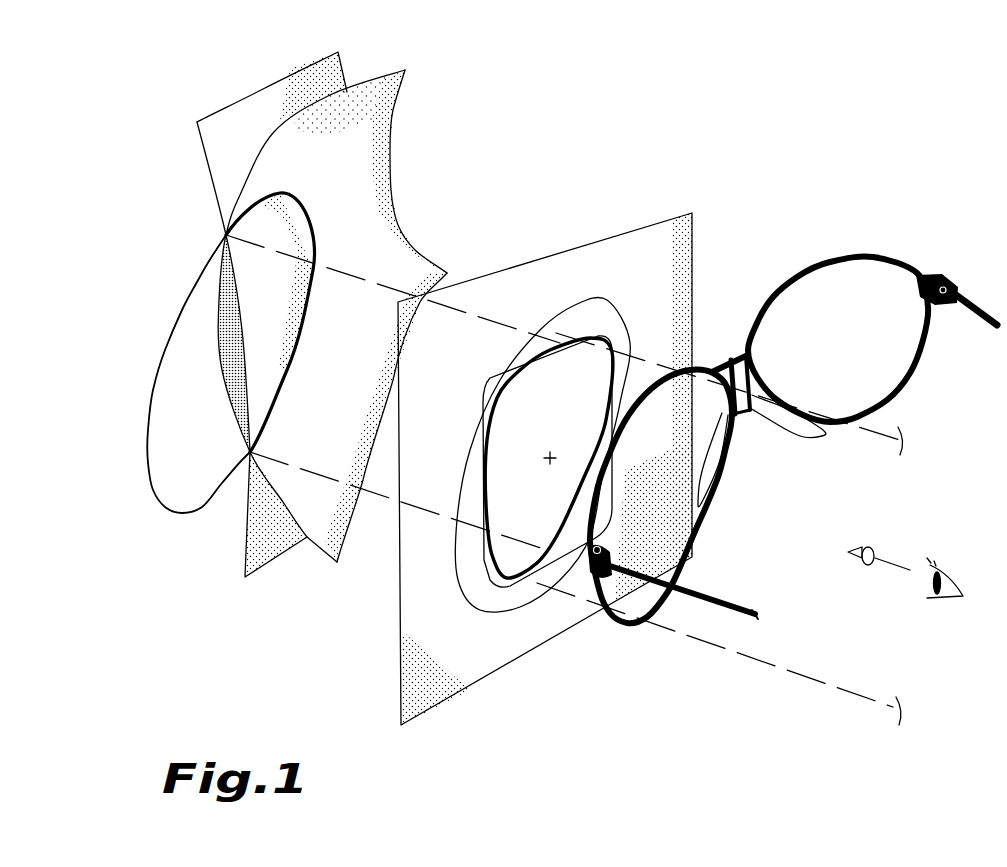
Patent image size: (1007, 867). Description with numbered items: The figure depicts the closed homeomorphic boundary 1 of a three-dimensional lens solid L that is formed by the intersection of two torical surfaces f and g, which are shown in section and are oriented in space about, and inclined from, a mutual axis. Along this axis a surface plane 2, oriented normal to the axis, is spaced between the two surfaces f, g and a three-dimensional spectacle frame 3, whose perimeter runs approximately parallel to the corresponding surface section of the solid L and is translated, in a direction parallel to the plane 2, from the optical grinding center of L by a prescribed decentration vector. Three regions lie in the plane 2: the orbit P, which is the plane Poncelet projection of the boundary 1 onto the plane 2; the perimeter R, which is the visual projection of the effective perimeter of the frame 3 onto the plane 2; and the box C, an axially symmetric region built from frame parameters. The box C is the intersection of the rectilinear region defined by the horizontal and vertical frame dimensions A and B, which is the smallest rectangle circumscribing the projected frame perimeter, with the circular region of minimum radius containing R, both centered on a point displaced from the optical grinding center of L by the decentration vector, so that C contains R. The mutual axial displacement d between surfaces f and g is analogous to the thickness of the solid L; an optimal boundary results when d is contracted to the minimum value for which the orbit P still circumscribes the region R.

The closed homeomorphic boundary 1 is at (158, 375).
The surface plane 2 is at (657, 225).
The spectacle frame 3 is at (862, 253).
The torical surface f is at (322, 60).
The torical surface g is at (395, 70).
The solid L is at (235, 357).
The mutual axial displacement d is at (180, 343).
The horizontal frame dimension A is at (608, 258).
The vertical frame dimension B is at (660, 310).
The box C is at (527, 367).
The perimeter R is at (600, 408).
The orbit P is at (475, 477).